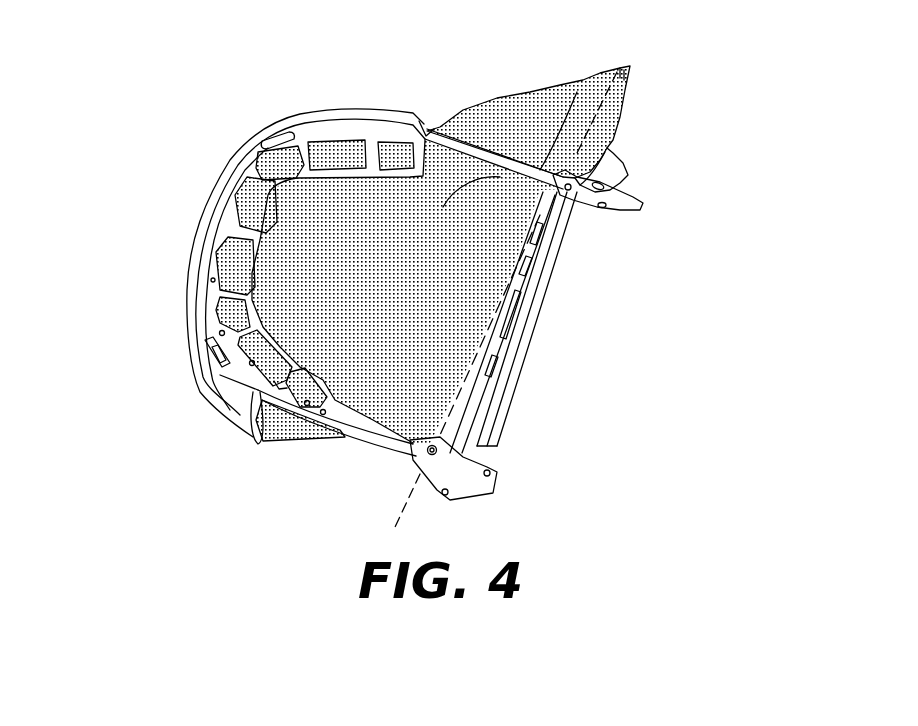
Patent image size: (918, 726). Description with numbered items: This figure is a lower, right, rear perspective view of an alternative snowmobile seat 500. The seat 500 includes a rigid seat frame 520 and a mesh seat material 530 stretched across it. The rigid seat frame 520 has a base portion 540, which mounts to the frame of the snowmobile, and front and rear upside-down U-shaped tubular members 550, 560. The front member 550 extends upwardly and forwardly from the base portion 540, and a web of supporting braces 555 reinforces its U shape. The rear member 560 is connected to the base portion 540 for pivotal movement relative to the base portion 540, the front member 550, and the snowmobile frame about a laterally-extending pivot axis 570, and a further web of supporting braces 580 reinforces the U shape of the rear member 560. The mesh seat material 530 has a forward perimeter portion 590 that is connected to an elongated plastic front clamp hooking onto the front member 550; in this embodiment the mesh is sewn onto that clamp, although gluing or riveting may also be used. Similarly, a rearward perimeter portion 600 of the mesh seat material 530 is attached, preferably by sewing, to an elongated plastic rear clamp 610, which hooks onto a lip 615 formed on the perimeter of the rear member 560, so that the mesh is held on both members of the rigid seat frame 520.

The seat 500 is at (200, 124).
The rigid seat frame 520 is at (580, 283).
The mesh seat material 530 is at (527, 123).
The base portion 540 is at (650, 215).
The front upside-down U-shaped tubular member 550 is at (533, 315).
The web of supporting braces 555 is at (547, 233).
The rear upside-down U-shaped tubular member 560 is at (256, 388).
The pivot axis 570 is at (415, 486).
The web of supporting braces 580 is at (266, 227).
The forward perimeter portion 590 is at (633, 68).
The rearward perimeter portion 600 is at (233, 272).
The rear clamp 610 is at (220, 377).
The lip 615 is at (431, 125).